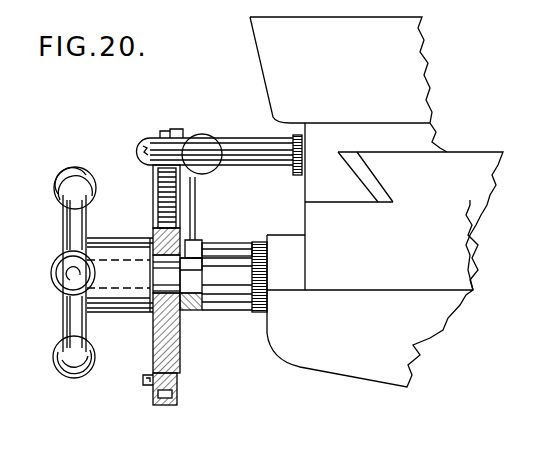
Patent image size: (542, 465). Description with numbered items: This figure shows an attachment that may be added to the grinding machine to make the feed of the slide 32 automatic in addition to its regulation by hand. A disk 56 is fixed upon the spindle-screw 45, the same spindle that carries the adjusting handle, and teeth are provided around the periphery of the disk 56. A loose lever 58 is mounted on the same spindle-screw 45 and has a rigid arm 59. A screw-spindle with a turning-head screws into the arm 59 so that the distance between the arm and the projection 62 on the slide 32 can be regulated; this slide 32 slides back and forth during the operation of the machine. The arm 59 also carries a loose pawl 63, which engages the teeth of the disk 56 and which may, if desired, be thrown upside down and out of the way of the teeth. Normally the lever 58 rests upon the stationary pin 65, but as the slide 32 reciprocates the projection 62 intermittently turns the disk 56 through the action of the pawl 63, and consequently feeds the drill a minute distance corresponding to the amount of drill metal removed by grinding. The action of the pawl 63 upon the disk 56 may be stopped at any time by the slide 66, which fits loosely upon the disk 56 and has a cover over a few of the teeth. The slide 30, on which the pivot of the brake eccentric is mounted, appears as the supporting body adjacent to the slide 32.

The slide 30 is at (372, 255).
The slide 32 is at (404, 221).
The spindle-screw 45 is at (218, 280).
The disk 56 is at (160, 342).
The loose lever 58 is at (185, 200).
The rigid arm 59 is at (205, 136).
The projection 62 is at (270, 148).
The loose pawl 63 is at (164, 130).
The stationary pin 65 is at (228, 252).
The slide 66 is at (153, 400).